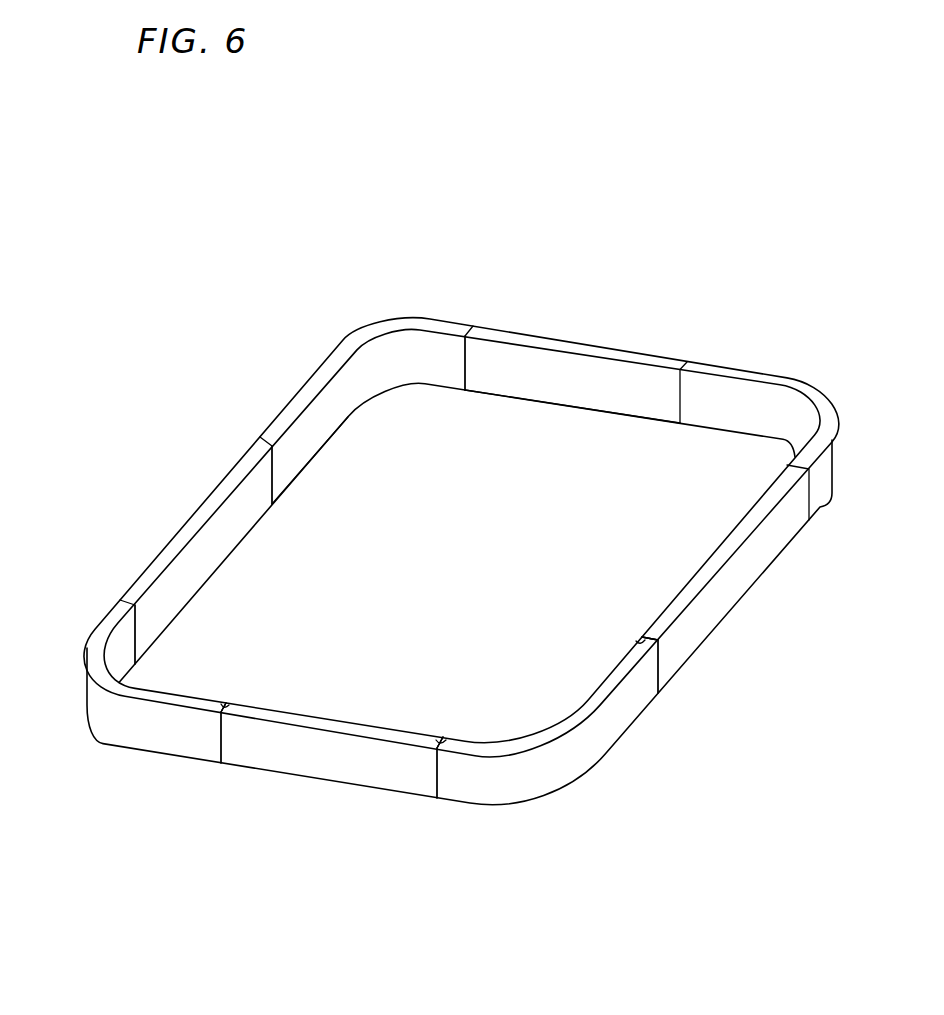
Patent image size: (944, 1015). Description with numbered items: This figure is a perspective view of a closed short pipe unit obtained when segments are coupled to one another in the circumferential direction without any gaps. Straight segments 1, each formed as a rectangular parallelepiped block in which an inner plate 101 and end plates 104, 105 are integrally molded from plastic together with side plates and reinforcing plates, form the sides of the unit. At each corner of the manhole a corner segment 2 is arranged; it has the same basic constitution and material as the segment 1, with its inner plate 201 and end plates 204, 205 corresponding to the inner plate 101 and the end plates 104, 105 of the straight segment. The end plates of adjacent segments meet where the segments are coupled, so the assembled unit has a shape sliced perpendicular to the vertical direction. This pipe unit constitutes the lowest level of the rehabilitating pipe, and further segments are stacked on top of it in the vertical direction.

The segment 1 is at (608, 334).
The segment 2 is at (388, 310).
The inner plate 101 is at (592, 396).
The end plate 104 is at (226, 704).
The end plate 105 is at (442, 738).
The inner plate 201 is at (448, 370).
The end plate 204 is at (226, 704).
The end plate 205 is at (439, 740).